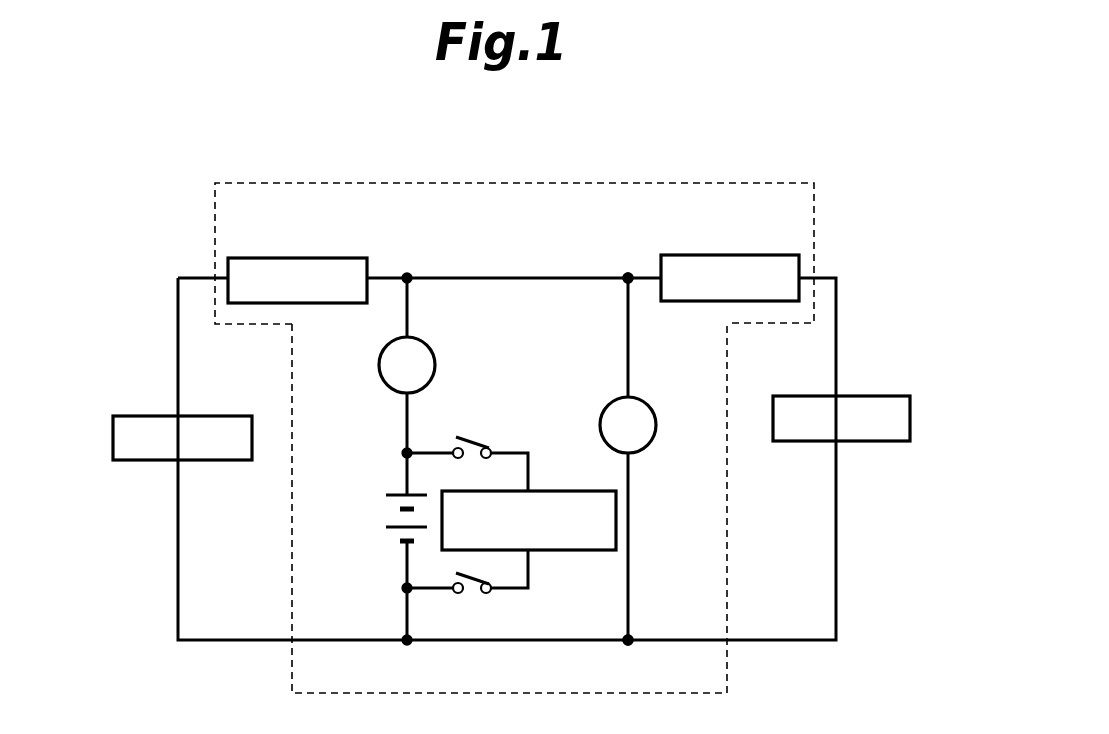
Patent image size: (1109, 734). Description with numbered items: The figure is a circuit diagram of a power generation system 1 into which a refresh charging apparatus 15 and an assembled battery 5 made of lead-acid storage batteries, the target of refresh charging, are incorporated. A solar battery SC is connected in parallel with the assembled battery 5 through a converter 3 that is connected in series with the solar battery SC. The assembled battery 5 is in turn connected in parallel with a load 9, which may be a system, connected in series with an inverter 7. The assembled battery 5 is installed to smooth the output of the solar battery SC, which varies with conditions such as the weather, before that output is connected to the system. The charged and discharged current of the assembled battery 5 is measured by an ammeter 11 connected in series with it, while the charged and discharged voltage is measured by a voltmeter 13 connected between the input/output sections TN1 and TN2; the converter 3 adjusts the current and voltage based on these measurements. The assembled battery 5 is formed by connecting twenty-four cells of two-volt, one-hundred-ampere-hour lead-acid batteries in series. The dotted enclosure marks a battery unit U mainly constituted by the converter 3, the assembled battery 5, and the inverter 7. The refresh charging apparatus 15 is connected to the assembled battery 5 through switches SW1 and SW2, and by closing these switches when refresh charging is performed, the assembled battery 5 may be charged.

The power generation system 1 is at (866, 243).
The battery unit U is at (612, 183).
The converter 3 is at (292, 258).
The assembled battery 5 is at (394, 527).
The inverter 7 is at (725, 255).
The load 9 is at (893, 396).
The ammeter 11 is at (435, 357).
The voltmeter 13 is at (655, 402).
The refresh charging apparatus 15 is at (540, 491).
The solar battery SC is at (218, 414).
The switch SW1 is at (473, 440).
The switch SW2 is at (470, 591).
The input/output section TN1 is at (631, 262).
The input/output section TN2 is at (631, 657).